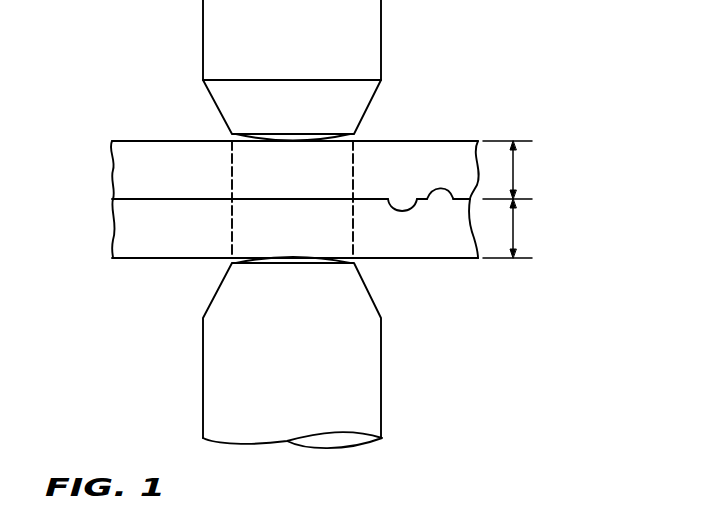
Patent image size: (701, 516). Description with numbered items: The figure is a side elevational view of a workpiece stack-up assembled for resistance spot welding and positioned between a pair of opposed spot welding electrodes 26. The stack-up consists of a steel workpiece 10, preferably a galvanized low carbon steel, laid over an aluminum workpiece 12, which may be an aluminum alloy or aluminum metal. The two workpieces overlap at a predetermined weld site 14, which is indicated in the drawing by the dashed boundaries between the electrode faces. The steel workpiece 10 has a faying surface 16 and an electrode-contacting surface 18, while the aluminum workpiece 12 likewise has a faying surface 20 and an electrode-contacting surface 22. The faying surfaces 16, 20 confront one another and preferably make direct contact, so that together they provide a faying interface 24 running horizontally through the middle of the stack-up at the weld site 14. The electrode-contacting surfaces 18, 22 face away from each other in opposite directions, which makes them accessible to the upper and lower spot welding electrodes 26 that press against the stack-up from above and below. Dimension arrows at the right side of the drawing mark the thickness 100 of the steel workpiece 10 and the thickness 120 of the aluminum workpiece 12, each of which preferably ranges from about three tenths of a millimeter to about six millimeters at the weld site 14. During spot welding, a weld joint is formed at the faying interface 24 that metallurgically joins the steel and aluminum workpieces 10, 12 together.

The steel workpiece 10 is at (127, 168).
The aluminum workpiece 12 is at (127, 225).
The weld site 14 is at (355, 168).
The faying surface 16 is at (417, 198).
The electrode-contacting surface 18 is at (463, 140).
The faying surface 20 is at (453, 198).
The electrode-contacting surface 22 is at (403, 258).
The faying interface 24 is at (248, 198).
The spot welding electrodes 26 is at (306, 34).
The thickness 100 is at (513, 172).
The thickness 120 is at (513, 228).